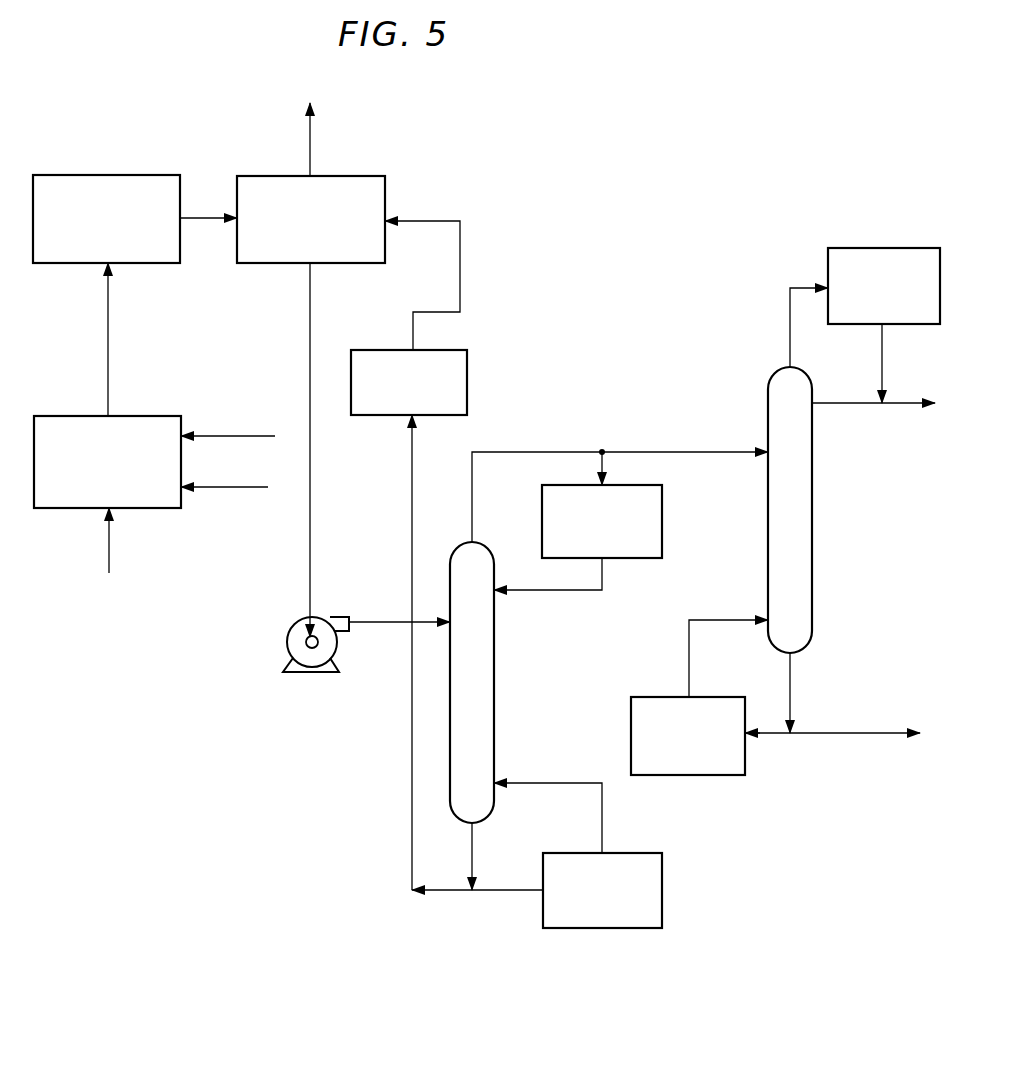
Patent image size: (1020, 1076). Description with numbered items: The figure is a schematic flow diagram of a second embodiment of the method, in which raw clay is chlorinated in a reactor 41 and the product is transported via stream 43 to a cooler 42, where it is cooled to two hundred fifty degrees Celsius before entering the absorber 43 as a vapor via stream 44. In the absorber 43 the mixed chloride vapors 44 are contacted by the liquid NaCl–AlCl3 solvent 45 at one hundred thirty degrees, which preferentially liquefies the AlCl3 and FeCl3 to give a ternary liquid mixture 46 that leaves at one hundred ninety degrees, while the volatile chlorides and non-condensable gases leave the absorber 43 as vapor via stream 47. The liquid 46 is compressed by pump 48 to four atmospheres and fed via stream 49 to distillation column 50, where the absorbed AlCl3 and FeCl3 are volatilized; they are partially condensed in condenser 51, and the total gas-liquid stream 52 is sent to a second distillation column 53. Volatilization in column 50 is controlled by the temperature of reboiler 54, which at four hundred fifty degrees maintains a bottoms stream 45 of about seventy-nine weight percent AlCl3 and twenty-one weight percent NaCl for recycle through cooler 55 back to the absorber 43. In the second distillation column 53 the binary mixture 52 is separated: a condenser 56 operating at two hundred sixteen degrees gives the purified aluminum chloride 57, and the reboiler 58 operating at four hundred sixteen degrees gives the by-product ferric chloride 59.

The reactor 41 is at (76, 509).
The cooler 42 is at (130, 175).
The absorber 43 is at (258, 176).
The mixed chloride vapor stream 44 is at (208, 220).
The NaCl–AlCl3 solvent stream 45 is at (428, 221).
The ternary liquid mixture stream 46 is at (310, 370).
The vapor stream 47 is at (310, 148).
The pump 48 is at (287, 643).
The feed stream 49 is at (372, 620).
The distillation column 50 is at (494, 700).
The condenser 51 is at (662, 520).
The gas-liquid stream 52 is at (684, 451).
The second distillation column 53 is at (768, 388).
The reboiler 54 is at (662, 893).
The cooler 55 is at (467, 365).
The condenser 56 is at (871, 248).
The purified aluminum chloride stream 57 is at (898, 405).
The reboiler 58 is at (631, 743).
The by-product ferric chloride stream 59 is at (880, 737).